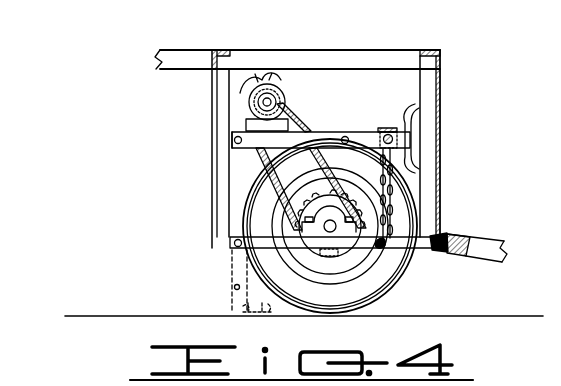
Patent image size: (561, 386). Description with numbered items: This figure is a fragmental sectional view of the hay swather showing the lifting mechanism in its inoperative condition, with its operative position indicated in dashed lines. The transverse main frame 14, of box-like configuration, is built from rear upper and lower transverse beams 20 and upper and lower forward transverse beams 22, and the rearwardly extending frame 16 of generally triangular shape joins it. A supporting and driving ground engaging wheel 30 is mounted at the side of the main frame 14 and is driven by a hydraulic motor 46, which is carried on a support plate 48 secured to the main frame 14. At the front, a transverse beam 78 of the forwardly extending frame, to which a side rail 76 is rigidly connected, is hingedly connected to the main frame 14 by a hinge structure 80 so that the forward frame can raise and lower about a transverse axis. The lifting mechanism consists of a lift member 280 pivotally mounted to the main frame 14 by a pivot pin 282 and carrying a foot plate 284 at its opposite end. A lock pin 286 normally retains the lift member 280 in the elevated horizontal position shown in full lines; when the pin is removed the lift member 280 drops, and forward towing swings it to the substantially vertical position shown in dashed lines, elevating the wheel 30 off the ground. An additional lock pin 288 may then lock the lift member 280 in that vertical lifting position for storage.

The rearwardly extending frame 16 is at (182, 50).
The main frame 14 is at (208, 87).
The rear upper and lower transverse beams 20 is at (218, 52).
The upper and lower forward transverse beams 22 is at (428, 49).
The hydraulic motor 46 is at (280, 90).
The support plate 48 is at (298, 112).
The lock pin 286 is at (381, 130).
The lift member 280 is at (325, 134).
The foot plate 284 is at (408, 115).
The pivot pin 282 is at (234, 141).
The lock pin 288 is at (234, 250).
The hinge structure 80 is at (450, 233).
The side rail 76 is at (484, 246).
The transverse beam 78 is at (462, 250).
The ground engaging wheel 30 is at (384, 275).